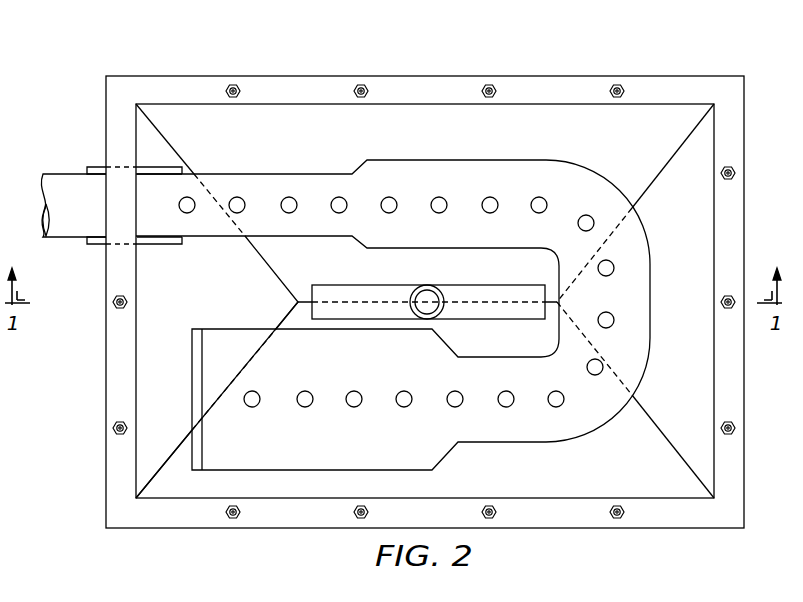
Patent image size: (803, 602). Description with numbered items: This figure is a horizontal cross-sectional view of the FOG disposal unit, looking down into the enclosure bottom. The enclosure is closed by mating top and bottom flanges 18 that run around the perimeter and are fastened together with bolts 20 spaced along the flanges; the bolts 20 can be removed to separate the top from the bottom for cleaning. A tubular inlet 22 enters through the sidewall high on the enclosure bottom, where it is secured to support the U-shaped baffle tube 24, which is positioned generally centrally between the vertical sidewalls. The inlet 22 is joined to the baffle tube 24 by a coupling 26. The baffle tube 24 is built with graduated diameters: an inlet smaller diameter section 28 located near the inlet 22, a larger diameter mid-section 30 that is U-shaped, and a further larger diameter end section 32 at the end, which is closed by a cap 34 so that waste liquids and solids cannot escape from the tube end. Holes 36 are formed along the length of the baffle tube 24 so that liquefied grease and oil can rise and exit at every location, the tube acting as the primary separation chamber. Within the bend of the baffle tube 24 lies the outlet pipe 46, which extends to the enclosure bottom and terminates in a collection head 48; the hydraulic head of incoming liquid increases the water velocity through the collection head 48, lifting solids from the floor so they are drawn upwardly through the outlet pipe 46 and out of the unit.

The top and bottom flanges 18 is at (425, 76).
The bolts 20 is at (492, 82).
The inlet 22 is at (69, 173).
The U-shaped baffle tube 24 is at (417, 303).
The coupling 26 is at (96, 246).
The inlet smaller diameter section 28 is at (258, 174).
The larger diameter mid-section 30 is at (651, 273).
The larger diameter end section 32 is at (435, 467).
The cap 34 is at (191, 340).
The holes 36 is at (565, 400).
The outlet pipe 46 is at (441, 289).
The collection head 48 is at (342, 284).